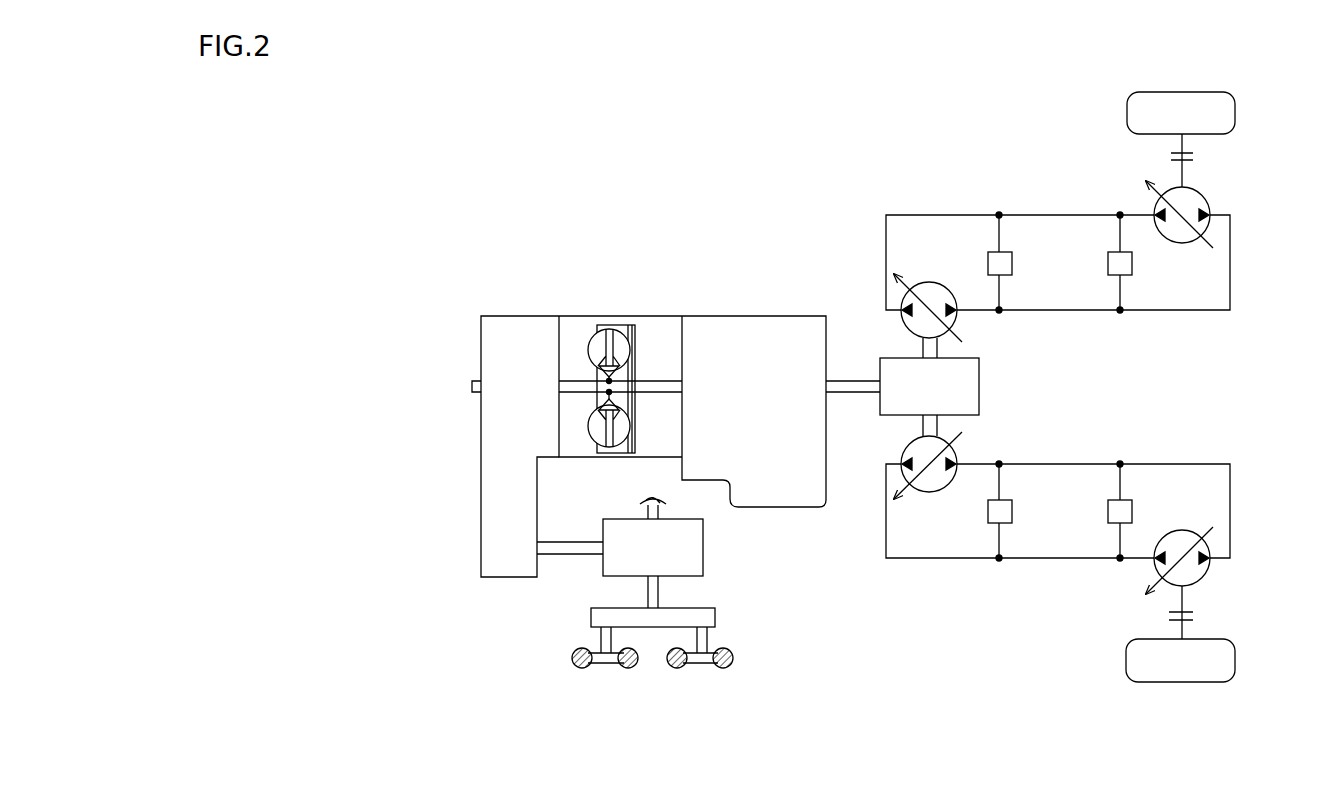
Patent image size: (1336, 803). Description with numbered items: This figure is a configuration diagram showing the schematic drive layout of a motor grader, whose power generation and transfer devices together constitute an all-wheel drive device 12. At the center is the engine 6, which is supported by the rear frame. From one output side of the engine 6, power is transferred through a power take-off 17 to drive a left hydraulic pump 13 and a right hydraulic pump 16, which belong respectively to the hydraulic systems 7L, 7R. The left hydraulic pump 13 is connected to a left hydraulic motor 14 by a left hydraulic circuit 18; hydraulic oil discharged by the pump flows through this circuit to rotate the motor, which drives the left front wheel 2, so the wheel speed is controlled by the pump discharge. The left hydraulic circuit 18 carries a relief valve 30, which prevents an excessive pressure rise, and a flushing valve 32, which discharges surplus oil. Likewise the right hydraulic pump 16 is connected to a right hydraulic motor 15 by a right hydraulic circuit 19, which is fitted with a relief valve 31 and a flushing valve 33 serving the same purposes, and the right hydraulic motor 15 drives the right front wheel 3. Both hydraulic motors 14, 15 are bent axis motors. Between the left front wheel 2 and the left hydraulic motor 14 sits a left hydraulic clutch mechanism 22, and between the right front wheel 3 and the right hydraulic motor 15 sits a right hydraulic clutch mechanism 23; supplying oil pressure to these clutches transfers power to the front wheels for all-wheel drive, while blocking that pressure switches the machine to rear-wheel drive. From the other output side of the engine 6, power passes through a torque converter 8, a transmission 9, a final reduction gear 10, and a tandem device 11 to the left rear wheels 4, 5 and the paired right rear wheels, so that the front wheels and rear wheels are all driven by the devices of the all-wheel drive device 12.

The left front wheel 2 is at (1216, 92).
The right front wheel 3 is at (1236, 654).
The left rear wheel 4 is at (678, 669).
The left rear wheel 5 is at (583, 669).
The engine 6 is at (720, 316).
The hydraulic system 7L is at (944, 207).
The hydraulic system 7R is at (894, 584).
The torque converter 8 is at (592, 434).
The transmission 9 is at (498, 579).
The final reduction gear 10 is at (705, 558).
The tandem device 11 is at (716, 617).
The all-wheel drive device 12 is at (676, 157).
The left hydraulic pump 13 is at (932, 282).
The left hydraulic motor 14 is at (1180, 244).
The right hydraulic motor 15 is at (1181, 530).
The right hydraulic pump 16 is at (905, 452).
The power take-off (PTO) 17 is at (981, 388).
The left hydraulic circuit 18 is at (1061, 311).
The right hydraulic circuit 19 is at (1061, 463).
The left hydraulic clutch mechanism 22 is at (1192, 162).
The right hydraulic clutch mechanism 23 is at (1190, 612).
The relief valve 30 is at (987, 260).
The relief valve 31 is at (987, 513).
The flushing valve 32 is at (1107, 262).
The flushing valve 33 is at (1107, 513).